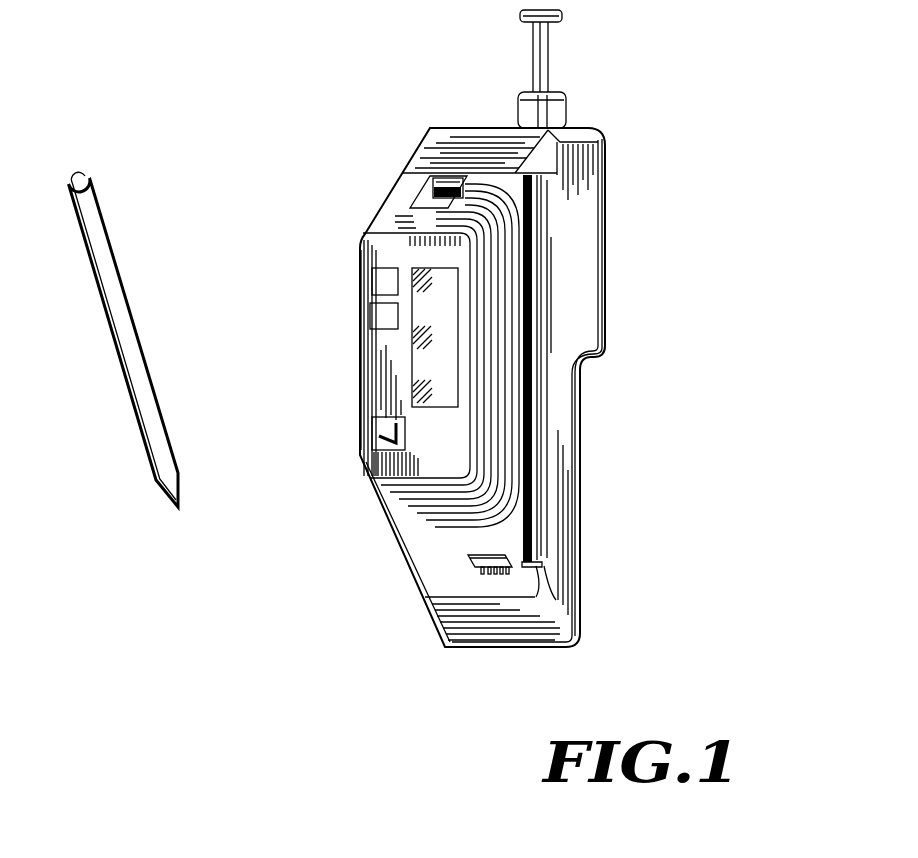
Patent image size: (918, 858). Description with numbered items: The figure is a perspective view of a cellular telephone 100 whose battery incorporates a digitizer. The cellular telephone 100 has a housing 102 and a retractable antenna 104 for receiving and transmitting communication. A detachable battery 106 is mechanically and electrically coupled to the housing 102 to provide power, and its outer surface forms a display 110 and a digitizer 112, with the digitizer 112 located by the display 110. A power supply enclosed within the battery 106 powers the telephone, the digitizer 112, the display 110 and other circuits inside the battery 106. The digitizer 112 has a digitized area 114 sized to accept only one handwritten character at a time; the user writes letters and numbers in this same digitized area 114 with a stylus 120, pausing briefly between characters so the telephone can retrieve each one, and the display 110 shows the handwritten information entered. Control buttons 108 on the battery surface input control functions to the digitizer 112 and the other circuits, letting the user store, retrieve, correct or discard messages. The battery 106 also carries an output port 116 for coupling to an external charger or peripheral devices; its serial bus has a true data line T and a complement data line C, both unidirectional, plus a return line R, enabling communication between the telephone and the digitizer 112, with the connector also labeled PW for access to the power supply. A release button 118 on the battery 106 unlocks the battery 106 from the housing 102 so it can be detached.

The cellular telephone 100 is at (800, 712).
The housing 102 is at (588, 173).
The retractable antenna 104 is at (558, 12).
The battery 106 is at (358, 326).
The control buttons 108 is at (375, 297).
The display 110 is at (452, 332).
The digitizer 112 is at (372, 437).
The digitized area 114 is at (387, 423).
The output port 116 is at (487, 555).
The release button 118 is at (437, 185).
The stylus 120 is at (103, 232).
The complement data line C is at (483, 573).
The true data line T is at (493, 575).
The return line R is at (503, 575).
The power pin PW is at (513, 568).